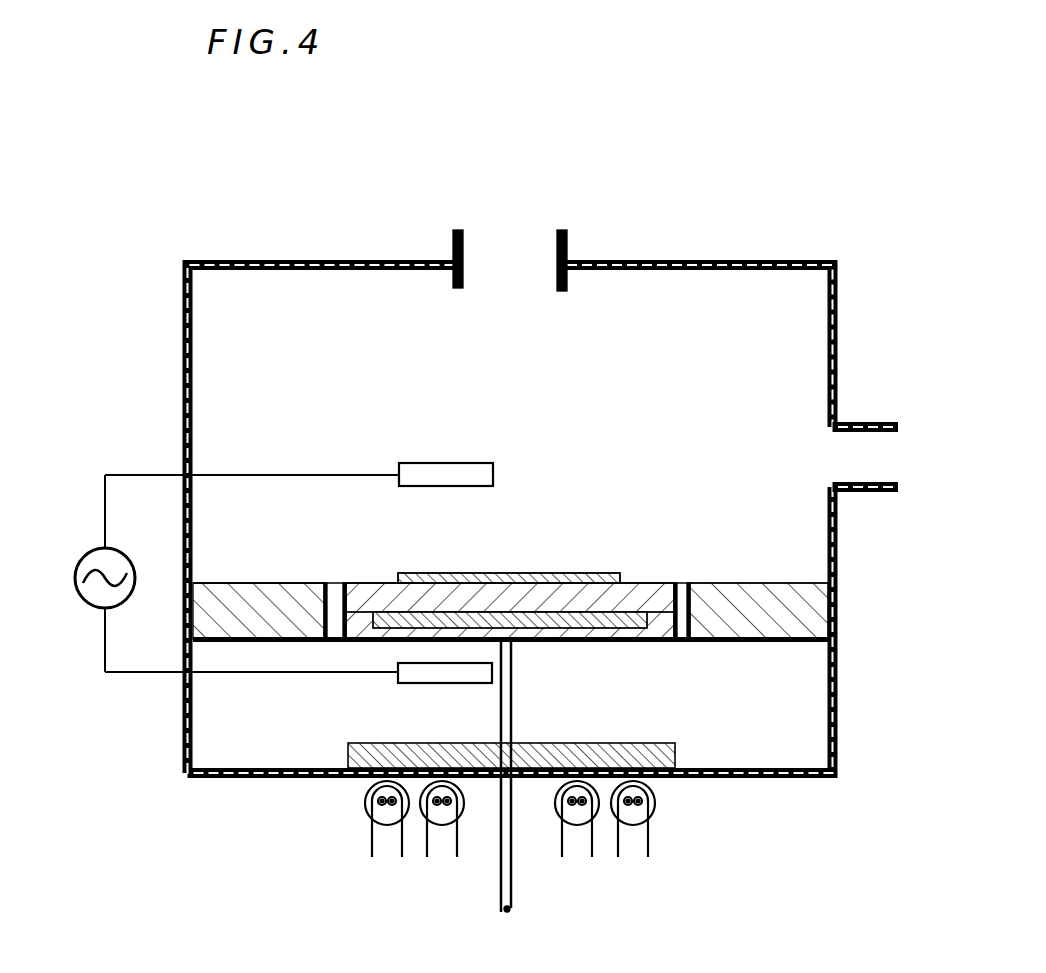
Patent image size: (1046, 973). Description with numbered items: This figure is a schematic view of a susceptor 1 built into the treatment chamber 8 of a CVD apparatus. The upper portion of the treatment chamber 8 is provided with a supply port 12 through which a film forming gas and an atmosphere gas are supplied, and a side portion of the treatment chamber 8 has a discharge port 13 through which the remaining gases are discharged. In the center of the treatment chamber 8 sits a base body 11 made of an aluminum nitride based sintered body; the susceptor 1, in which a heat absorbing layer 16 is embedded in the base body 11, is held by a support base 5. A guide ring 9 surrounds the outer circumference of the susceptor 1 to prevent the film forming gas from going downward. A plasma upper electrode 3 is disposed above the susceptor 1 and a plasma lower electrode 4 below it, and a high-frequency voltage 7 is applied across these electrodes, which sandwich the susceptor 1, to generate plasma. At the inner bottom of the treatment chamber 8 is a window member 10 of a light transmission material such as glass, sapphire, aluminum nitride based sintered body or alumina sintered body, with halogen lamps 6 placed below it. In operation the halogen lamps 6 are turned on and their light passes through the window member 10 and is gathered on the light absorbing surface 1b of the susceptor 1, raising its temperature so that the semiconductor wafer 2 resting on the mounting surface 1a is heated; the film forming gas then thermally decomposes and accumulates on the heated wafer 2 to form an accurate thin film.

The susceptor 1 is at (510, 610).
The mounting surface 1a is at (370, 583).
The light absorbing surface 1b is at (378, 638).
The semiconductor wafer 2 is at (496, 573).
The plasma upper electrode 3 is at (455, 470).
The plasma lower electrode 4 is at (448, 673).
The support base 5 is at (514, 897).
The halogen lamps 6 is at (442, 845).
The high-frequency voltage 7 is at (92, 550).
The treatment chamber 8 is at (672, 259).
The guide ring 9 is at (745, 583).
The window member 10 is at (352, 762).
The base body 11 is at (357, 638).
The supply port 12 is at (510, 247).
The discharge port 13 is at (882, 453).
The heat absorbing layer 16 is at (630, 628).